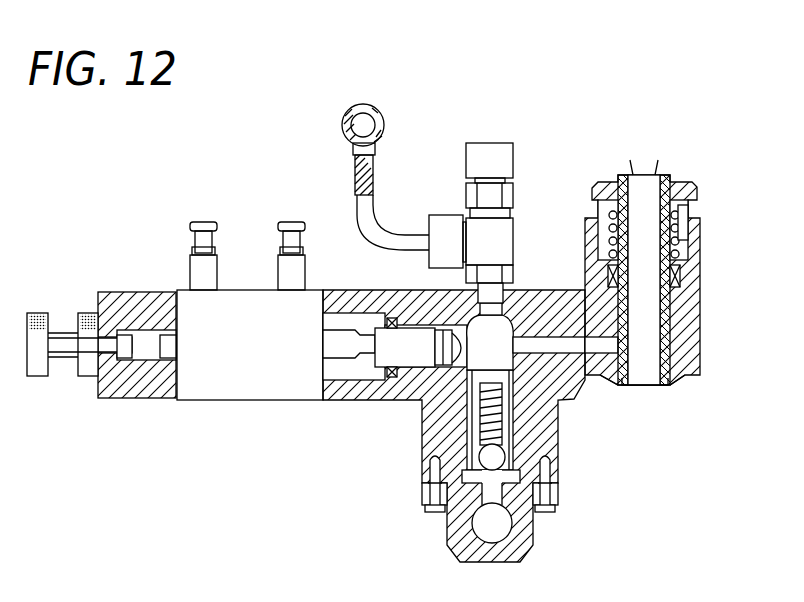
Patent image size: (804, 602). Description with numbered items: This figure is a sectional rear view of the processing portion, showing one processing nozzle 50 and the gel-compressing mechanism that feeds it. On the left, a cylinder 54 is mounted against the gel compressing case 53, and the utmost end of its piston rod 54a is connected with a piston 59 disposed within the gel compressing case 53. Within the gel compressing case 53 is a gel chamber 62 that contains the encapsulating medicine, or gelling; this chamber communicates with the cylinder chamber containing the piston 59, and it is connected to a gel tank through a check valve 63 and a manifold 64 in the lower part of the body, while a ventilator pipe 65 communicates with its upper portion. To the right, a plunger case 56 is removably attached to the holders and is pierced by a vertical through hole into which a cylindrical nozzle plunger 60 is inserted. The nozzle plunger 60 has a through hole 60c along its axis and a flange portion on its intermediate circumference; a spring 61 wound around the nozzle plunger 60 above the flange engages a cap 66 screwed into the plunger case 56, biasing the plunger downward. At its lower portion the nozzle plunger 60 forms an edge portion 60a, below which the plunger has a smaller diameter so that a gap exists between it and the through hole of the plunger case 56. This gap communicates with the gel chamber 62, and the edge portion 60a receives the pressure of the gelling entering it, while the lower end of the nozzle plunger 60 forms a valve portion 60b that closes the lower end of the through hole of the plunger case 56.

The processing nozzle 50 is at (636, 252).
The gel compressing case 53 is at (363, 393).
The cylinder 54 is at (260, 305).
The piston rod 54a is at (330, 345).
The plunger case 56 is at (585, 230).
The piston 59 is at (412, 352).
The nozzle plunger 60 is at (637, 177).
The edge portion 60a is at (685, 380).
The valve portion 60b is at (628, 385).
The through hole 60c is at (650, 177).
The spring 61 is at (692, 212).
The gel chamber 62 is at (498, 328).
The check valve 63 is at (497, 483).
The manifold 64 is at (453, 533).
The ventilator pipe 65 is at (344, 121).
The cap 66 is at (605, 178).